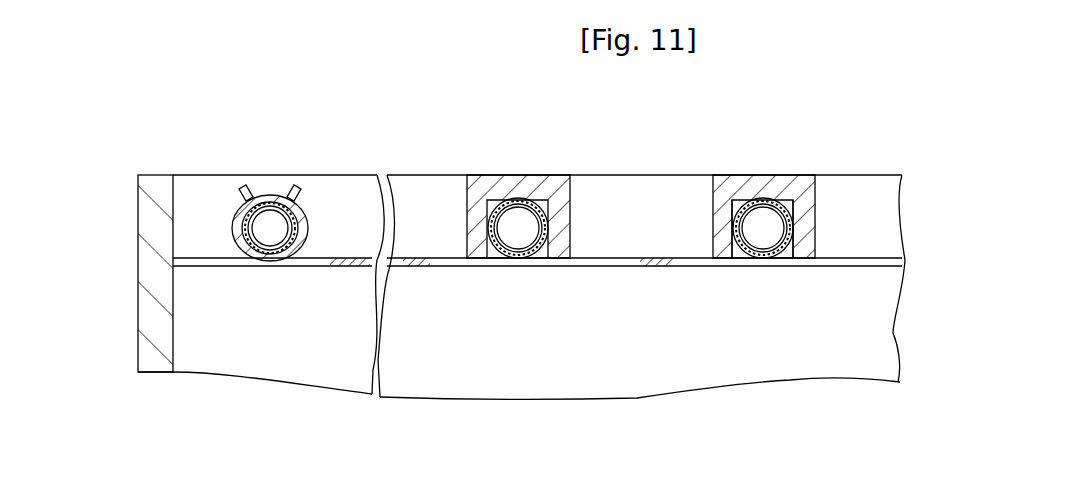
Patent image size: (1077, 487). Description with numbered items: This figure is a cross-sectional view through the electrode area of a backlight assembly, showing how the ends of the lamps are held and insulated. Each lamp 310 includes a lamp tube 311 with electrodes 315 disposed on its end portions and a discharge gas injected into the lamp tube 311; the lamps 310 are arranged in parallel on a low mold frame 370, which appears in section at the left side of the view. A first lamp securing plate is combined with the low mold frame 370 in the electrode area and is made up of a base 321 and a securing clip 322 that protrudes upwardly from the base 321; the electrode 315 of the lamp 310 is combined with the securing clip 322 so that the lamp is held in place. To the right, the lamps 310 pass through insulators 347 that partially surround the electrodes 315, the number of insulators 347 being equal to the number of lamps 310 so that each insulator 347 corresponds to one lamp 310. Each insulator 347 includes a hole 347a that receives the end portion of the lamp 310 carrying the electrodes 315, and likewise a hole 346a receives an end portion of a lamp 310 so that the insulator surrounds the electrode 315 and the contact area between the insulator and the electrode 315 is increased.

The lamp 310 is at (521, 162).
The lamp tube 311 is at (522, 197).
The electrode 315 is at (508, 198).
The base 321 is at (632, 260).
The securing clip 322 is at (242, 200).
The hole 346a is at (540, 258).
The insulator 347 is at (744, 183).
The hole 347a is at (783, 258).
The low mold frame 370 is at (157, 285).